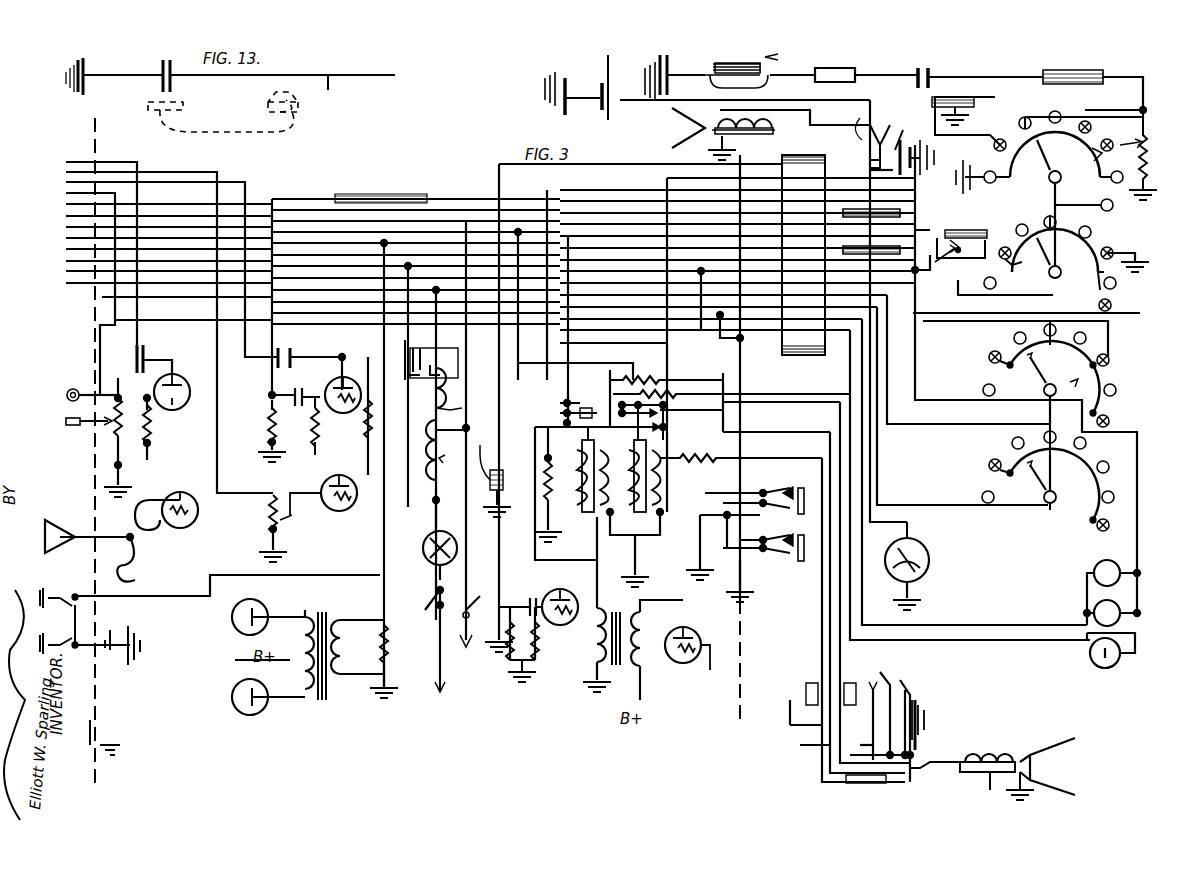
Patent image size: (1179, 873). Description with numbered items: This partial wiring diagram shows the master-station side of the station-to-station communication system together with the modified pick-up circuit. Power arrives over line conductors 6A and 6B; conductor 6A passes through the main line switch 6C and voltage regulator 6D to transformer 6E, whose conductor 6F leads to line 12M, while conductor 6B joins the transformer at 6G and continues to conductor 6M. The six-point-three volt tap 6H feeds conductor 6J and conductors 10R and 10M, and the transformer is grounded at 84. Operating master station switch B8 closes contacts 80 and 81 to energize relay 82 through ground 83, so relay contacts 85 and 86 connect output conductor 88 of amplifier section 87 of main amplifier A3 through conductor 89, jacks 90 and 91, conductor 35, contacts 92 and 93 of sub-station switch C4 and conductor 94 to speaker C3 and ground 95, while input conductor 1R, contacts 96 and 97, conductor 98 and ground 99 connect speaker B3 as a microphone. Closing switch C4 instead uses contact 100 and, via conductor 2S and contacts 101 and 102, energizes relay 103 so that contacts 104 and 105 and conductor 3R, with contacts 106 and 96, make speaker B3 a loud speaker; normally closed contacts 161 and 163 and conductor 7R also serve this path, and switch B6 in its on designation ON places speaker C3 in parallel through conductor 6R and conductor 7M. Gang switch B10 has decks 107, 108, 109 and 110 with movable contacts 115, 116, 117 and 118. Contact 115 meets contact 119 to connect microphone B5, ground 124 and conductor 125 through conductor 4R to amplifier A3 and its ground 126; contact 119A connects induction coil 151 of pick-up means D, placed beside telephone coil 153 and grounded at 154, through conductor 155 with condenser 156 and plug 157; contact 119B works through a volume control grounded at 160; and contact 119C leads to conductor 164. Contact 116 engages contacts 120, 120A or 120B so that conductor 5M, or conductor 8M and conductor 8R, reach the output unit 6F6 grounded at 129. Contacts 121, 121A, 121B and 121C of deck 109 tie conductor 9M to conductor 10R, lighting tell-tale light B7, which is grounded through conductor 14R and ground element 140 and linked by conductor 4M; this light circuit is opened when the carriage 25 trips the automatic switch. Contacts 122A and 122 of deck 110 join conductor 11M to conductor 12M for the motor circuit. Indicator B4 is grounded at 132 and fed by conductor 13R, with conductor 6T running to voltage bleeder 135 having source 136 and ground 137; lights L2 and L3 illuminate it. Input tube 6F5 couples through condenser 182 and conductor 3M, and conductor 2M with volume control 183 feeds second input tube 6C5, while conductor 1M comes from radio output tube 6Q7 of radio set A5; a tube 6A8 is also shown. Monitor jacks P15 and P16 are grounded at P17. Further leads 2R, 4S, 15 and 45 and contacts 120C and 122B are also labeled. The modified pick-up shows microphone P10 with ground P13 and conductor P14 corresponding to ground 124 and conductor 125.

In FIG. 13, the ground P13 is at (70, 66).
In FIG. 13, the microphone P10 is at (162, 66).
In FIG. 13, the conductor P14 is at (344, 88).
In FIG. 3, the conductor 1M is at (168, 345).
In FIG. 3, the conductor 2M is at (203, 152).
In FIG. 3, the conductor 3M is at (185, 253).
In FIG. 3, the conductor 4M is at (1000, 666).
In FIG. 3, the conductor line 5M is at (340, 203).
In FIG. 3, the system conductor 6M is at (455, 160).
In FIG. 3, the conductor 7M is at (264, 220).
In FIG. 3, the conductor 8M is at (519, 271).
In FIG. 3, the conductor 9M is at (584, 292).
In FIG. 3, the conductor 10M is at (150, 261).
In FIG. 3, the conductor 11M is at (482, 355).
In FIG. 3, the system connecting conductor line 12M is at (476, 447).
In FIG. 3, the input conductor 1R is at (709, 371).
In FIG. 3, the relay conductor 2R is at (680, 420).
In FIG. 3, the conductor 3R is at (682, 287).
In FIG. 3, the conductor 4R is at (275, 198).
In FIG. 3, the conductor 6R is at (692, 297).
In FIG. 3, the conductor 7R is at (764, 321).
In FIG. 3, the conductor 8R is at (399, 464).
In FIG. 3, the conductor 10R is at (750, 345).
In FIG. 3, the conductor 13R is at (479, 416).
In FIG. 3, the conductor 14R is at (875, 462).
In FIG. 3, the conductor 2S is at (724, 346).
In FIG. 3, the switch lead 4S is at (613, 338).
In FIG. 3, the ground element 140 is at (787, 263).
In FIG. 3, the line conductor 6B is at (466, 442).
In FIG. 3, the ground 124 is at (550, 85).
In FIG. 3, the microphone B5 is at (605, 65).
In FIG. 3, the ground 154 is at (655, 68).
In FIG. 3, the telephone system coil 153 is at (686, 63).
In FIG. 3, the induction coil 151 is at (760, 90).
In FIG. 3, the pick-up means D is at (778, 58).
In FIG. 3, the conductor 155 is at (958, 82).
In FIG. 3, the plug 157 is at (885, 59).
In FIG. 3, the condenser 156 is at (980, 69).
In FIG. 3, the conductor 125 is at (640, 100).
In FIG. 3, the speaker B3 is at (718, 124).
In FIG. 3, the ground 99 is at (715, 155).
In FIG. 3, the conductor 98 is at (830, 118).
In FIG. 3, the contact 96 is at (869, 123).
In FIG. 3, the master station switch B8 is at (879, 134).
In FIG. 3, the contact 97 is at (880, 144).
In FIG. 3, the contact 80 is at (905, 145).
In FIG. 3, the contact 106 is at (892, 165).
In FIG. 3, the contact 81 is at (917, 178).
In FIG. 3, the contact 119 is at (998, 145).
In FIG. 3, the contact 119A is at (1025, 115).
In FIG. 3, the contact 119B is at (1108, 119).
In FIG. 3, the movable contact 115 is at (1050, 165).
In FIG. 3, the deck 107 is at (1039, 152).
In FIG. 3, the ground connector 160 is at (1131, 155).
In FIG. 3, the contact 119C is at (1076, 199).
In FIG. 3, the conductor 164 is at (1102, 204).
In FIG. 3, the contact 120A is at (1070, 219).
In FIG. 3, the contact 120B is at (1114, 246).
In FIG. 3, the contact 120 is at (1010, 244).
In FIG. 3, the movable contact 116 is at (1048, 272).
In FIG. 3, the deck 108 is at (1050, 284).
In FIG. 3, the contact 120C is at (1120, 291).
In FIG. 3, the on position ON is at (960, 237).
In FIG. 3, the master station switch B6 is at (955, 262).
In FIG. 3, the contact 121A is at (1056, 331).
In FIG. 3, the contact 121 is at (992, 352).
In FIG. 3, the movable contact 117 is at (1041, 382).
In FIG. 3, the deck 109 is at (1091, 391).
In FIG. 3, the contact 121B is at (1119, 365).
In FIG. 3, the contact 121C is at (1121, 412).
In FIG. 3, the stationary contact 122A is at (1045, 438).
In FIG. 3, the stationary contact 122 is at (992, 470).
In FIG. 3, the movable contact 118 is at (1035, 490).
In FIG. 3, the master station gang switch B10 is at (1032, 490).
In FIG. 3, the deck 110 is at (1090, 505).
In FIG. 3, the contact 122B is at (1098, 533).
In FIG. 3, the volt meter indicator B4 is at (930, 568).
In FIG. 3, the ground 132 is at (920, 606).
In FIG. 3, the light L2 is at (1107, 573).
In FIG. 3, the light L3 is at (1112, 598).
In FIG. 3, the tell-tale signal light B7 is at (1098, 666).
In FIG. 3, the sub-station switch C4 is at (893, 677).
In FIG. 3, the contact 92 is at (900, 680).
In FIG. 3, the contact 93 is at (905, 688).
In FIG. 3, the contact 100 is at (912, 702).
In FIG. 3, the contact 101 is at (883, 680).
In FIG. 3, the contact 102 is at (872, 694).
In FIG. 3, the carriage 25 is at (776, 405).
In FIG. 3, the lead 15 is at (810, 385).
In FIG. 3, the lead 45 is at (752, 450).
In FIG. 3, the conductor 35 is at (780, 422).
In FIG. 3, the conductor 94 is at (945, 762).
In FIG. 3, the ground 95 is at (1010, 806).
In FIG. 3, the speaker C3 is at (1030, 747).
In FIG. 3, the output conductor 88 is at (566, 517).
In FIG. 3, the relay contact 104 is at (563, 444).
In FIG. 3, the relay 103 is at (558, 502).
In FIG. 3, the relay contact 105 is at (600, 420).
In FIG. 3, the relay contact 161 is at (600, 405).
In FIG. 3, the relay contact 163 is at (655, 451).
In FIG. 3, the relay contact 85 is at (651, 415).
In FIG. 3, the relay contact 86 is at (654, 429).
In FIG. 3, the conductor 89 is at (665, 465).
In FIG. 3, the relay 82 is at (662, 484).
In FIG. 3, the ground 83 is at (640, 575).
In FIG. 3, the jack 90 is at (772, 490).
In FIG. 3, the jack 91 is at (782, 543).
In FIG. 3, the transformer ground 84 is at (431, 360).
In FIG. 3, the conductor 6J is at (450, 385).
In FIG. 3, the tap 6H is at (462, 405).
In FIG. 3, the connection 6G is at (457, 450).
In FIG. 3, the transformer 6E is at (450, 460).
In FIG. 3, the conductor 6F is at (430, 533).
In FIG. 3, the voltage regulator 6D is at (440, 570).
In FIG. 3, the main line switch 6C is at (438, 615).
In FIG. 3, the conductor 6A is at (430, 655).
In FIG. 3, the first input tube 6F5 is at (440, 494).
In FIG. 3, the amplifier section 87 is at (590, 640).
In FIG. 3, the output unit 6F6 is at (471, 655).
In FIG. 3, the ground connection 129 is at (380, 705).
In FIG. 3, the radio output tube 6Q7 is at (172, 377).
In FIG. 3, the radio set A5 is at (168, 412).
In FIG. 3, the source voltage 136 is at (111, 415).
In FIG. 3, the ground connection 137 is at (125, 483).
In FIG. 3, the conductor 6T is at (68, 425).
In FIG. 3, the voltage bleeder and divider 135 is at (110, 428).
In FIG. 3, the tube 6A8 is at (129, 518).
In FIG. 3, the ground P17 is at (140, 598).
In FIG. 3, the monitor jack P15 is at (62, 583).
In FIG. 3, the monitor jack P16 is at (90, 680).
In FIG. 3, the condenser 182 is at (280, 352).
In FIG. 3, the main amplifier A3 is at (250, 459).
In FIG. 3, the ground 126 is at (272, 460).
In FIG. 3, the second input tube 6C5 is at (337, 440).
In FIG. 3, the volume control 183 is at (275, 530).